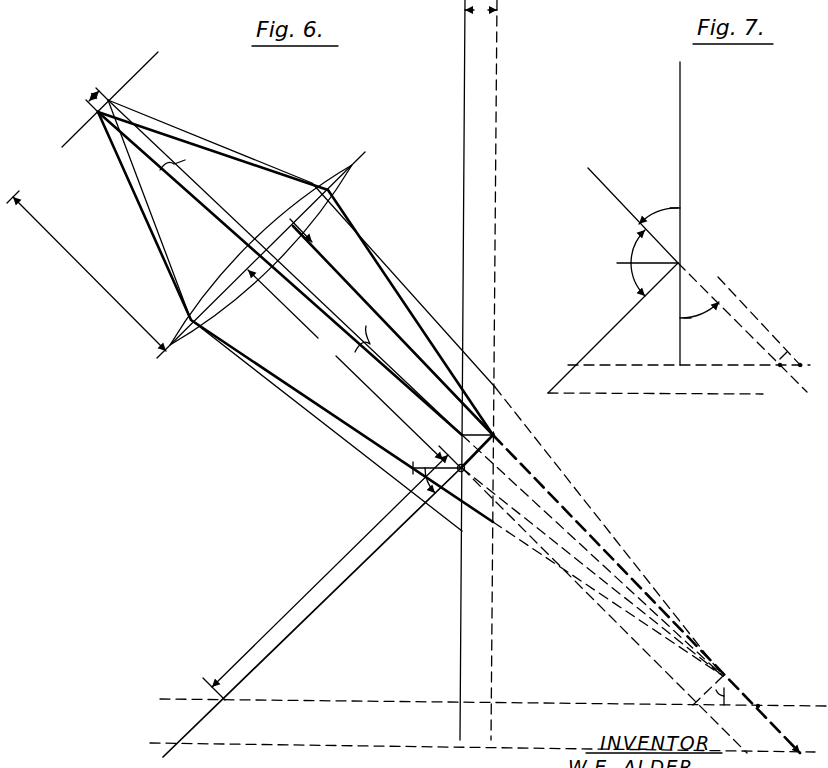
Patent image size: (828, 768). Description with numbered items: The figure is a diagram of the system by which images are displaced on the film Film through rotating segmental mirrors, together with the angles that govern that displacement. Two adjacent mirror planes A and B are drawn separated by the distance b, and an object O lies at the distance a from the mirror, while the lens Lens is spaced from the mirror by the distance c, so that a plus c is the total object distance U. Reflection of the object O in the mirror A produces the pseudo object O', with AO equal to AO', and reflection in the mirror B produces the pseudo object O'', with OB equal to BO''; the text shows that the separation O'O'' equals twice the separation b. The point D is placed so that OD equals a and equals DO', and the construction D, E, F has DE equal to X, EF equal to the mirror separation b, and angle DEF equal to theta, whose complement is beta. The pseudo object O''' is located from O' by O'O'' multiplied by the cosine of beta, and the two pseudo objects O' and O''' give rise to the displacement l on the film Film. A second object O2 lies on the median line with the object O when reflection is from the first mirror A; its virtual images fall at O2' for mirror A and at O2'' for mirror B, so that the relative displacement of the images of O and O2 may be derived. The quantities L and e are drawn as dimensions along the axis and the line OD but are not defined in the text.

In FIG. 6, the film Film is at (143, 70).
In FIG. 6, the lens Lens is at (338, 192).
In FIG. 6, the distance from film to lens L is at (86, 271).
In FIG. 6, the displacement on film l is at (91, 95).
In FIG. 6, the distance from mirror to lens c is at (345, 365).
In FIG. 6, the distance from O to D e is at (332, 573).
In FIG. 6, the distance of separation of mirrors b is at (481, 11).
In FIG. 6, the first mirror plane A is at (455, 372).
In FIG. 7, the first mirror plane A is at (688, 387).
In FIG. 6, the second mirror plane B is at (491, 371).
In FIG. 6, the point D is at (468, 469).
In FIG. 6, the point E is at (500, 428).
In FIG. 6, the point F is at (477, 427).
In FIG. 6, the object O is at (494, 709).
In FIG. 7, the object O is at (689, 373).
In FIG. 6, the second object O2 is at (312, 618).
In FIG. 7, the second object O2 is at (655, 337).
In FIG. 6, the pseudo object from mirror A O' is at (610, 618).
In FIG. 7, the pseudo object from mirror A O' is at (775, 374).
In FIG. 6, the pseudo object from mirror B O'' is at (783, 737).
In FIG. 7, the pseudo object from mirror B O'' is at (805, 374).
In FIG. 6, the pseudo object O''' is at (631, 570).
In FIG. 7, the pseudo object O''' is at (763, 322).